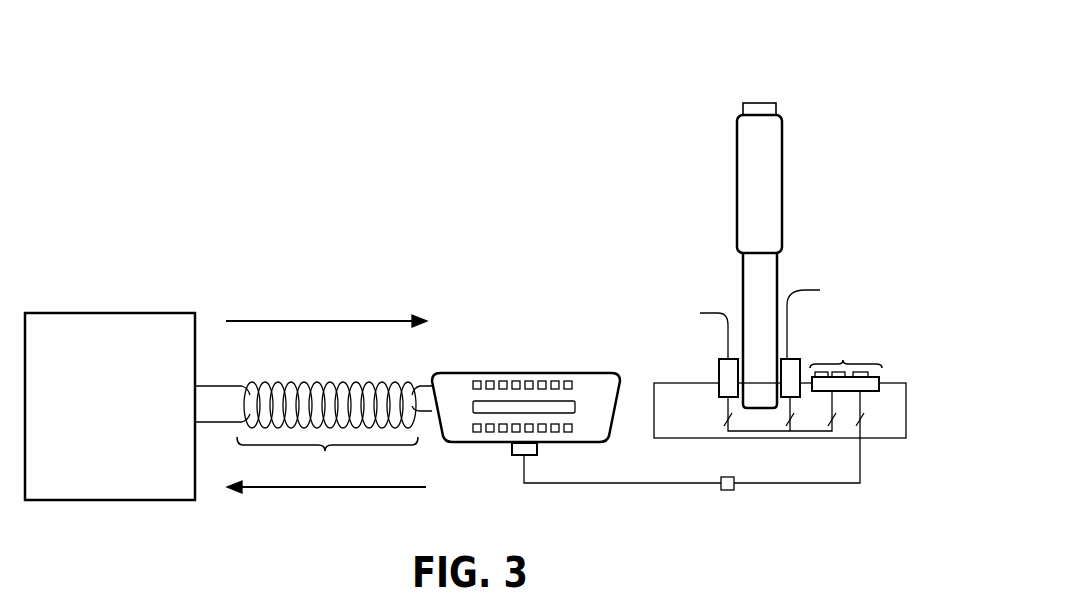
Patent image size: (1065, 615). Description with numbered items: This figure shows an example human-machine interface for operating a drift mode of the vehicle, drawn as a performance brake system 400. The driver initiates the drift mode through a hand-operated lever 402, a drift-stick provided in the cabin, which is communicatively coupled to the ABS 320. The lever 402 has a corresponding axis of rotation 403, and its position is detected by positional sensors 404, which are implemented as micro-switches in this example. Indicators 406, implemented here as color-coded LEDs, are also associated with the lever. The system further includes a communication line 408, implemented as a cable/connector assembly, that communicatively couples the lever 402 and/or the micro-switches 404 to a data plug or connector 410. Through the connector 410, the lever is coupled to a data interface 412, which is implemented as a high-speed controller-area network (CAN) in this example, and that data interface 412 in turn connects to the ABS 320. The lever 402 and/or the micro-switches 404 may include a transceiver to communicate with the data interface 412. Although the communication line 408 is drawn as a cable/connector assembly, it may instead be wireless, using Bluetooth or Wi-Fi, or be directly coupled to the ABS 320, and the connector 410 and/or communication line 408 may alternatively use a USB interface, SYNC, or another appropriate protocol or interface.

The ABS 320 is at (143, 313).
The performance brake system 400 is at (759, 228).
The hand-operated lever 402 is at (798, 255).
The axis of rotation 403 is at (760, 383).
The positional sensors 404 is at (719, 377).
The indicators 406 is at (843, 361).
The communication line 408 is at (607, 483).
The data plug or connector 410 is at (487, 373).
The data interface 412 is at (313, 404).